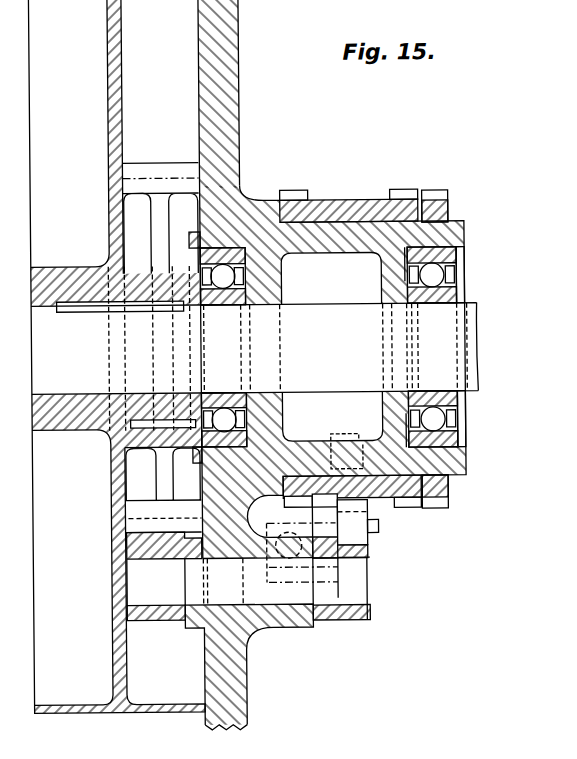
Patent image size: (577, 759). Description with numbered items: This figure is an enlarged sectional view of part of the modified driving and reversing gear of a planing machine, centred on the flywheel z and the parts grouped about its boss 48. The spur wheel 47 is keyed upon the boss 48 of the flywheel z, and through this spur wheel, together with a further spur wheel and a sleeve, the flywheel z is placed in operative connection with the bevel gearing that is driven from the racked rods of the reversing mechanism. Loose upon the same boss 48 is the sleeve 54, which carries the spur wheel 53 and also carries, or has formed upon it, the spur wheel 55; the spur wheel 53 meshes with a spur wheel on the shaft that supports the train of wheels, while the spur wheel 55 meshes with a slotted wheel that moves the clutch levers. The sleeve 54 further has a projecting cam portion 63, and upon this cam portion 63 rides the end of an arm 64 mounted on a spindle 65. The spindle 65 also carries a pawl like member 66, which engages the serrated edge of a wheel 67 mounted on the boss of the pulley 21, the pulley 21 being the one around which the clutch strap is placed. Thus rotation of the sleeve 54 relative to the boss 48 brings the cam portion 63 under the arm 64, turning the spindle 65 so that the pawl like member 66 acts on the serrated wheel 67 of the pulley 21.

The pulley 21 is at (116, 71).
The flywheel z is at (223, 72).
The boss 48 is at (249, 222).
The spur wheel 55 is at (305, 193).
The sleeve 54 is at (343, 208).
The spur wheel 47 is at (431, 197).
The spur wheel 53 is at (402, 503).
The cam portion 63 is at (367, 501).
The arm 64 is at (366, 548).
The spindle 65 is at (262, 598).
The pawl like member 66 is at (148, 542).
The wheel 67 is at (152, 498).